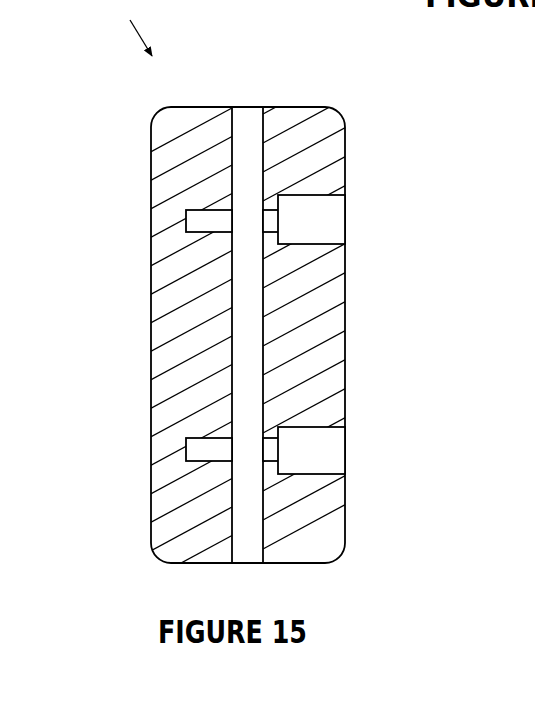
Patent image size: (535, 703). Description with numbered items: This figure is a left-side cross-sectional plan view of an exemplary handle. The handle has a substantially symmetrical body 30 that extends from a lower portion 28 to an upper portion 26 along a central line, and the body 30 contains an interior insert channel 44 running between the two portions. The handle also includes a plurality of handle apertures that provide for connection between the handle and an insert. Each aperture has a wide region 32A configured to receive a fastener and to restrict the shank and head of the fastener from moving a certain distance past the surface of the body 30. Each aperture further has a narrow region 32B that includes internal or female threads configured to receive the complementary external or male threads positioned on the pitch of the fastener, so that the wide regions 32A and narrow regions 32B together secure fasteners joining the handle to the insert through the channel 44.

The body 30 is at (173, 153).
The interior insert channel 44 is at (242, 106).
The upper portion 26 is at (295, 107).
The lower portion 28 is at (278, 565).
The wide region 32A is at (336, 446).
The narrow region 32B is at (199, 221).